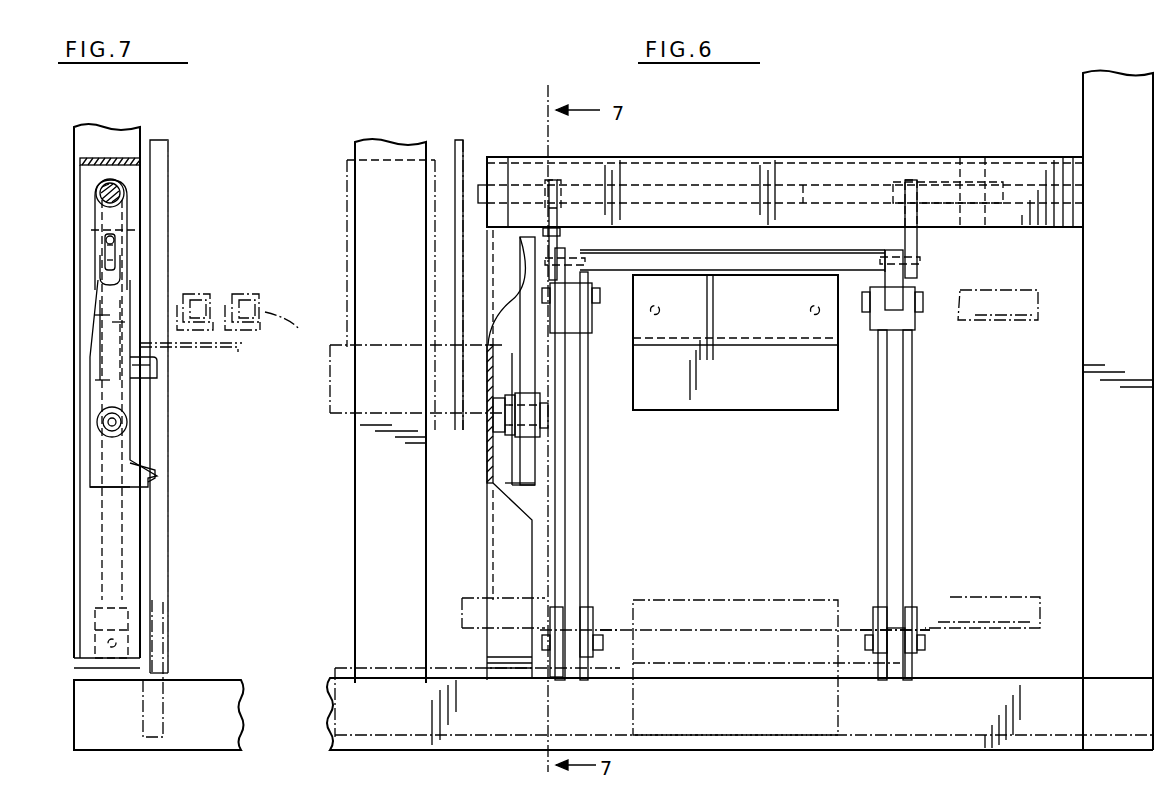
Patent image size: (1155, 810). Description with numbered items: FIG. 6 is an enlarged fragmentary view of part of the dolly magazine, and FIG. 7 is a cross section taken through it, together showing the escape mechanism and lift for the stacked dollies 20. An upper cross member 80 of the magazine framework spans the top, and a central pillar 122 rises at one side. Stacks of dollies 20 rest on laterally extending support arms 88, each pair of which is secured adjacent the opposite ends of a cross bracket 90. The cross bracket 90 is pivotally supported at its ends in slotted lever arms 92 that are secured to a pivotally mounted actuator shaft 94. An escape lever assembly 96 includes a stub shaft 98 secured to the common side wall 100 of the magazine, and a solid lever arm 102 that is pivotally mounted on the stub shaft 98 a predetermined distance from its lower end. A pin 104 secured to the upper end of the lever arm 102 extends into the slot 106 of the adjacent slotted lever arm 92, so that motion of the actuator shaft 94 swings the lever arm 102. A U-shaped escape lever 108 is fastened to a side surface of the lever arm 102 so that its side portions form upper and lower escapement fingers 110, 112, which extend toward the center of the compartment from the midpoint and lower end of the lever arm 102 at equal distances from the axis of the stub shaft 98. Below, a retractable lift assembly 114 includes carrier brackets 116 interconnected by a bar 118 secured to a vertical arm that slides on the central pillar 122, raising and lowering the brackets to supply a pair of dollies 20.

In FIG. 7, the dollies 20 is at (212, 295).
In FIG. 6, the dollies 20 is at (1003, 320).
In FIG. 6, the upper cross member 80 is at (896, 155).
In FIG. 6, the support arm 88 is at (578, 330).
In FIG. 6, the cross bracket 90 is at (757, 258).
In FIG. 7, the slotted lever arm 92 is at (115, 218).
In FIG. 6, the slotted lever arm 92 is at (562, 233).
In FIG. 7, the actuator shaft 94 is at (99, 193).
In FIG. 6, the actuator shaft 94 is at (812, 192).
In FIG. 7, the escape lever assembly 96 is at (88, 460).
In FIG. 6, the escape lever assembly 96 is at (508, 470).
In FIG. 7, the stub shaft 98 is at (128, 422).
In FIG. 6, the stub shaft 98 is at (550, 425).
In FIG. 7, the side wall 100 is at (75, 575).
In FIG. 6, the side wall 100 is at (487, 462).
In FIG. 7, the lever arm 102 is at (100, 330).
In FIG. 6, the lever arm 102 is at (535, 360).
In FIG. 7, the pin 104 is at (104, 247).
In FIG. 6, the pin 104 is at (545, 240).
In FIG. 7, the slot 106 is at (118, 240).
In FIG. 7, the U-shaped escape lever 108 is at (100, 484).
In FIG. 6, the U-shaped escape lever 108 is at (522, 485).
In FIG. 7, the upper escapement finger 110 is at (130, 375).
In FIG. 7, the lower escapement finger 112 is at (148, 482).
In FIG. 6, the retractable lift assembly 114 is at (793, 420).
In FIG. 7, the carrier bracket 116 is at (236, 352).
In FIG. 6, the carrier bracket 116 is at (767, 340).
In FIG. 6, the bar 118 is at (677, 412).
In FIG. 6, the central pillar 122 is at (368, 596).